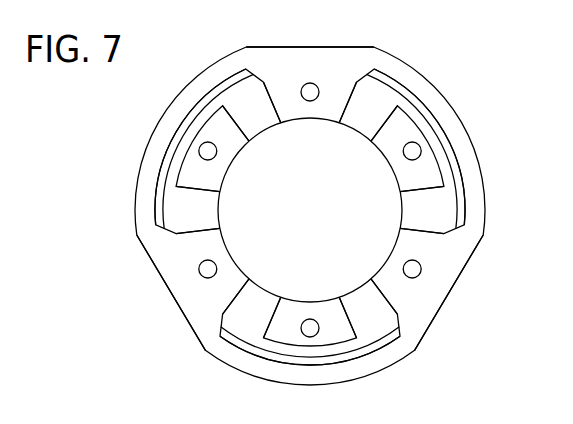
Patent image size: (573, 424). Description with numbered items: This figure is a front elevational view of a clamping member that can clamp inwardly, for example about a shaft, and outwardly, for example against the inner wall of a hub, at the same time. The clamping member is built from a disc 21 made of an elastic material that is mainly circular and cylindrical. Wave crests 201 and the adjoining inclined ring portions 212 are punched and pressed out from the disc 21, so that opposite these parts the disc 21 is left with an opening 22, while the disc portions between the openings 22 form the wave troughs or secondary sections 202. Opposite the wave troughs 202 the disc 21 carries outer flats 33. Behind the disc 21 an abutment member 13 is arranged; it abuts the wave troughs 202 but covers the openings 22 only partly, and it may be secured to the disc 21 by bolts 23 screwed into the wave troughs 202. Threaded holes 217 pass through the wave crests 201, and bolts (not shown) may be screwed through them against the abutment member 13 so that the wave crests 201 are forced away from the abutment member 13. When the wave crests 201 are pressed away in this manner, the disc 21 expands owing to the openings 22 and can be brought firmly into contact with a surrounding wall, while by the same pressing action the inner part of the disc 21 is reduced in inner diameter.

The disc 21 is at (150, 168).
The outer flats 33 is at (303, 47).
The wave troughs 202 is at (358, 70).
The wave crests 201 is at (213, 124).
The abutment member 13 is at (190, 145).
The opening 22 is at (162, 207).
The inclined ring portions 212 is at (369, 122).
The threaded holes 217 is at (219, 158).
The bolts 23 is at (316, 84).